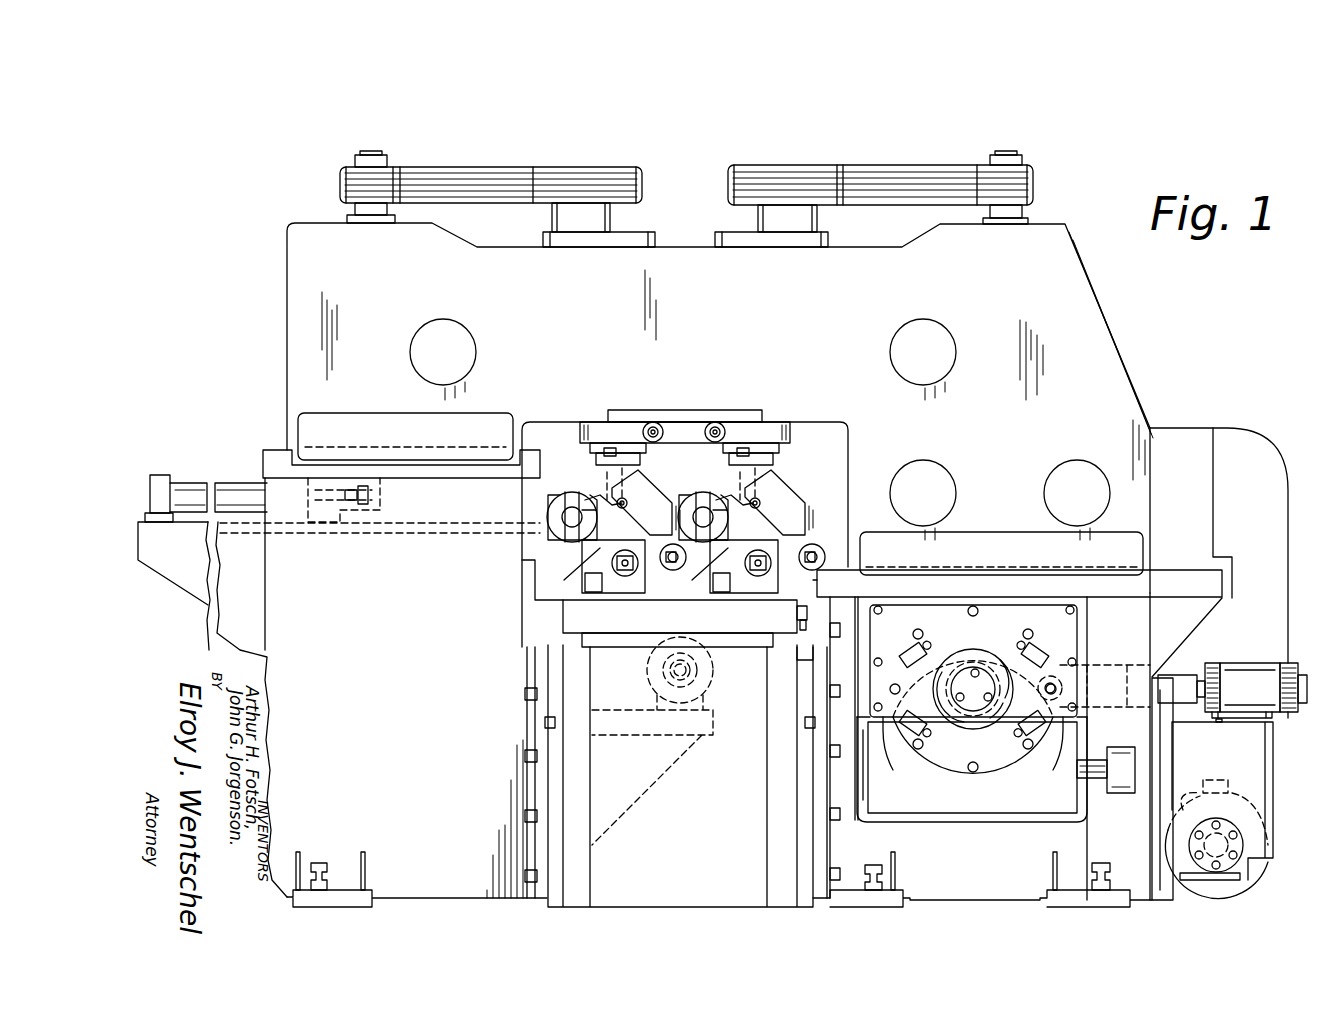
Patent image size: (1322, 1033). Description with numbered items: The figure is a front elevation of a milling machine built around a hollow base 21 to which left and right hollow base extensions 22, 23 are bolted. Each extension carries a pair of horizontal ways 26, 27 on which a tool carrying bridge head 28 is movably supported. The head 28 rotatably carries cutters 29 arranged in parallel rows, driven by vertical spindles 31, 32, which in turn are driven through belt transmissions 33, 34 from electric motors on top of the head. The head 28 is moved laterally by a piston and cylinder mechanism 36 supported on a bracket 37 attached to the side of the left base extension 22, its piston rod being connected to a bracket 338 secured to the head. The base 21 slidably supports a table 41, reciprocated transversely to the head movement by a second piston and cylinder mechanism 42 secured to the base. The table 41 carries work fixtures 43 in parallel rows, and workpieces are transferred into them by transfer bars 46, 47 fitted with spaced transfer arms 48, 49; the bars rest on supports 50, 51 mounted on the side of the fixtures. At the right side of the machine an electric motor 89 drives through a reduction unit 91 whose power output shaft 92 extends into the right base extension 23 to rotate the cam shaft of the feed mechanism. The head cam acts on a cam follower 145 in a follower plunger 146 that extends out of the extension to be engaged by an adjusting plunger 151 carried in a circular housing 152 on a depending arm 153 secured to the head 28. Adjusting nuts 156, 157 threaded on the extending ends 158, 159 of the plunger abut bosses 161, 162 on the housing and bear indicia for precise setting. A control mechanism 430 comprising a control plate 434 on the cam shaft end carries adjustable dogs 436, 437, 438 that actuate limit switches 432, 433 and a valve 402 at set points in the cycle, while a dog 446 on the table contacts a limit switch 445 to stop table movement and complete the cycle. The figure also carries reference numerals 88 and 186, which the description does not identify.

The hollow base 21 is at (635, 886).
The left hollow base extension 22 is at (415, 882).
The right hollow base extension 23 is at (946, 886).
The ways 26 is at (277, 450).
The ways 27 is at (831, 570).
The tool carrying bridge head 28 is at (1100, 358).
The cutters 29 is at (664, 489).
The vertical spindle 31 is at (600, 214).
The vertical spindle 32 is at (756, 212).
The belt transmission 33 is at (466, 202).
The belt transmission 34 is at (873, 202).
The piston and cylinder mechanism 36 is at (210, 472).
The bracket 37 is at (176, 565).
The bracket 338 is at (386, 512).
The table 41 is at (578, 612).
The piston and cylinder mechanism 42 is at (648, 679).
The work fixtures 43 is at (646, 478).
The transfer bar 46 is at (565, 517).
The transfer bar 47 is at (684, 545).
The transfer arms 48 is at (617, 507).
The transfer arms 49 is at (748, 507).
The support 50 is at (568, 484).
The support 51 is at (708, 484).
The gear housing 88 is at (1138, 614).
The electric motor 89 is at (1217, 882).
The reduction unit 91 is at (1256, 792).
The power output shaft 92 is at (1090, 769).
The cam follower 145 is at (1047, 701).
The follower plunger 146 is at (1098, 680).
The adjusting plunger 151 is at (1303, 690).
The circular housing 152 is at (1246, 702).
The depending arm 153 is at (1241, 442).
The adjusting nut 156 is at (1213, 663).
The adjusting nut 157 is at (1290, 663).
The extending end 158 is at (1197, 675).
The extending end 159 is at (1303, 702).
The boss 161 is at (1228, 672).
The boss 162 is at (1281, 676).
The index ring 186 is at (965, 678).
The valve 402 is at (913, 732).
The control mechanism 430 is at (972, 754).
The limit switch 432 is at (909, 647).
The limit switch 433 is at (1027, 648).
The control plate 434 is at (970, 658).
The adjustable dog 436 is at (1001, 663).
The adjustable dog 437 is at (1003, 736).
The adjustable dog 438 is at (932, 731).
The limit switch 445 is at (800, 648).
The dog 446 is at (800, 606).